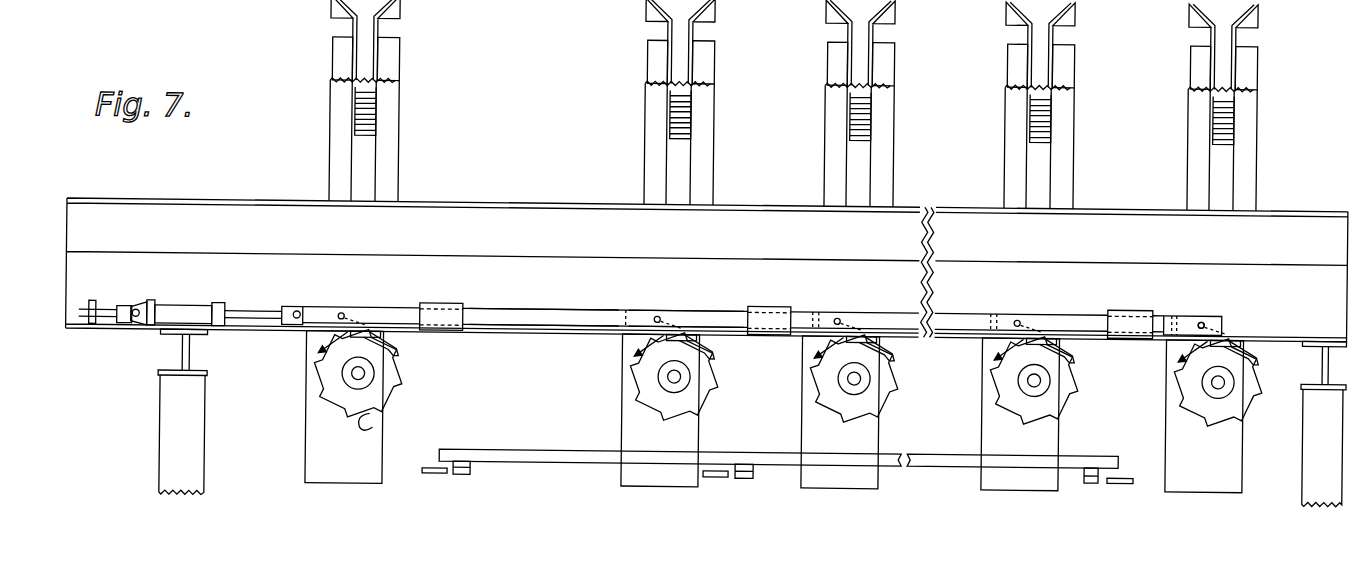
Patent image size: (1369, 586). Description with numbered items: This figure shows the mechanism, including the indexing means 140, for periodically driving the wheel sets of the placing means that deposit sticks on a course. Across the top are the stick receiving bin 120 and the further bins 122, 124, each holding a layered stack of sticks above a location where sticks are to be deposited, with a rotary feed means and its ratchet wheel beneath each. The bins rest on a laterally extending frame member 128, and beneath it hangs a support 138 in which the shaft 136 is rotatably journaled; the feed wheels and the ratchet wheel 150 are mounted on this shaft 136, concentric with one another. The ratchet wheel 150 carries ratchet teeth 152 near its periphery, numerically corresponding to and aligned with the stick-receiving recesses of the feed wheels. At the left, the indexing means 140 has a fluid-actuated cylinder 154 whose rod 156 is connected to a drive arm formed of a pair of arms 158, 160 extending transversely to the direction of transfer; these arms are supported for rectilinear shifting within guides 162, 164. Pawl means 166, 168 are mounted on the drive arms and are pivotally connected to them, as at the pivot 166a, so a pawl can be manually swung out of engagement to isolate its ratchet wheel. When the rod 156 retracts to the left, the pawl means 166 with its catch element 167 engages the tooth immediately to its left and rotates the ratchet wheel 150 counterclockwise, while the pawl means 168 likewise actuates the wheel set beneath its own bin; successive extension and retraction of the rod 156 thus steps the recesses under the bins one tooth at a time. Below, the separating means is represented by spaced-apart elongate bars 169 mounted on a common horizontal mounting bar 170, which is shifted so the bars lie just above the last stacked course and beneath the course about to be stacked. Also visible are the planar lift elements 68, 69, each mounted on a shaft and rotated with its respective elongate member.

The stick receiving bin 120 is at (399, 65).
The bin 122 is at (713, 65).
The bin 124 is at (893, 64).
The frame member 128 is at (100, 215).
The shaft 136 is at (352, 370).
The support 138 is at (328, 447).
The indexing means 140 is at (485, 300).
The ratchet wheel 150 is at (329, 385).
The ratchet teeth 152 is at (388, 416).
The fluid-actuated cylinder 154 is at (186, 304).
The rod 156 is at (254, 306).
The drive arm 158 is at (594, 303).
The drive arm 160 is at (562, 303).
The guide 162 is at (446, 298).
The guide 164 is at (766, 299).
The pawl means 166 is at (374, 327).
The pivotal connection 166a is at (304, 304).
The catch element 167 is at (398, 338).
The pawl means 168 is at (690, 325).
The elongate bars 169 is at (465, 473).
The mounting bar 170 is at (784, 453).
The lift element 68 is at (440, 472).
The lift element 69 is at (721, 473).